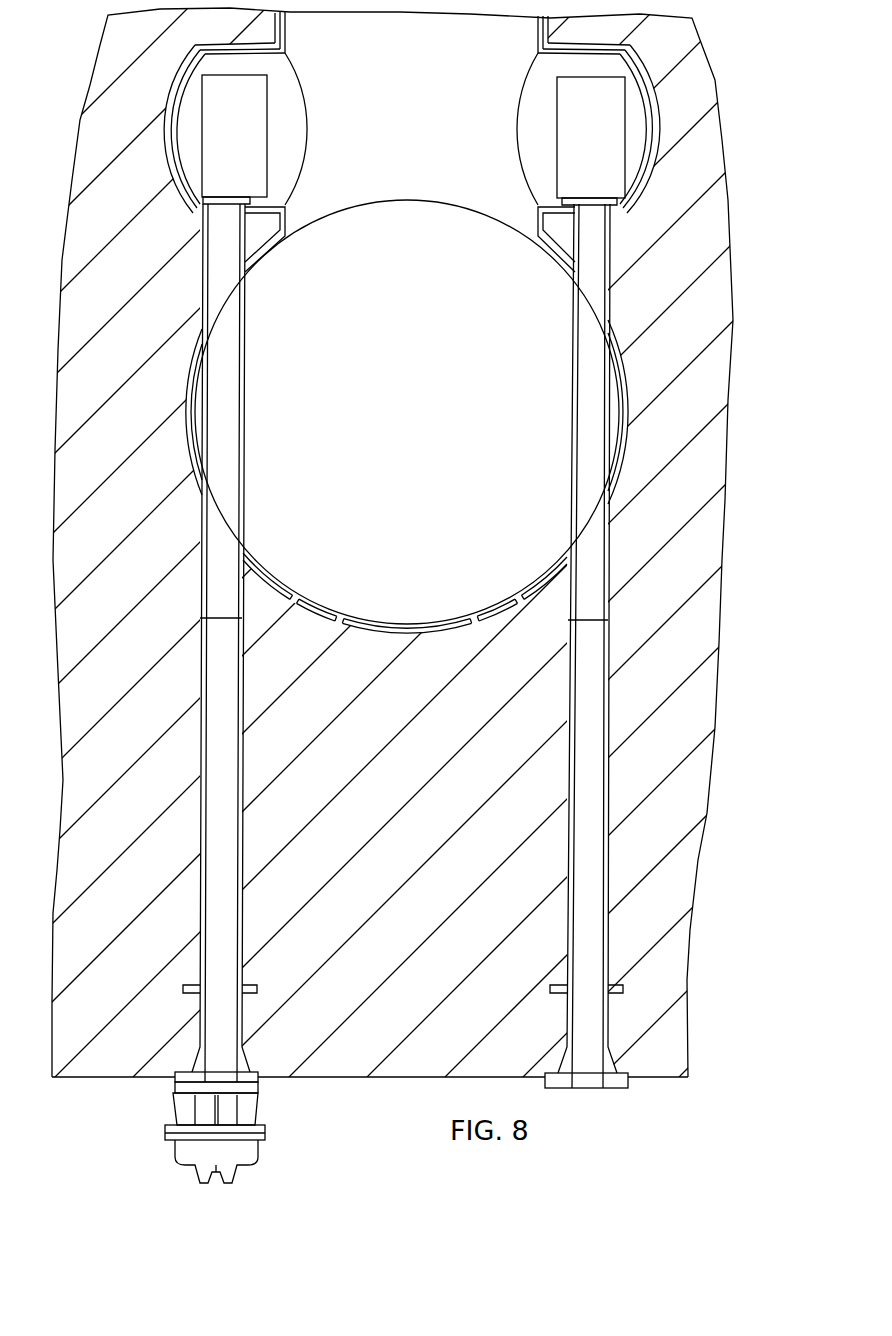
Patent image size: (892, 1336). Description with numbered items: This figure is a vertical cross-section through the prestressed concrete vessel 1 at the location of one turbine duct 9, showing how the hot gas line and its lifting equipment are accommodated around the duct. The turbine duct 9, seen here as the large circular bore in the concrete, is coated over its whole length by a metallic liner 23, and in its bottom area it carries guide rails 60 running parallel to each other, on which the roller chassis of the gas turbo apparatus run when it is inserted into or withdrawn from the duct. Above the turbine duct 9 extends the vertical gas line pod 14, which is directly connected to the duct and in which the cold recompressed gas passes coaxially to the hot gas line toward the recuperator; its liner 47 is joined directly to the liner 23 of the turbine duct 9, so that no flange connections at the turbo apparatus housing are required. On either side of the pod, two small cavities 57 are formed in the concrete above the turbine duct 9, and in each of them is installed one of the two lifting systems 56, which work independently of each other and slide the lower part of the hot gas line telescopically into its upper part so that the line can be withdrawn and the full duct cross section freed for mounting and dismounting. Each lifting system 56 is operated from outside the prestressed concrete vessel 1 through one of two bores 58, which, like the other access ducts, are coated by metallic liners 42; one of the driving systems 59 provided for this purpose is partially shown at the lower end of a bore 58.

The prestressed concrete vessel 1 is at (689, 295).
The turbine duct 9 is at (557, 473).
The gas line pod 14 is at (479, 47).
The metallic liner 23 is at (623, 383).
The metallic liner 42 is at (241, 700).
The liner 47 is at (286, 30).
The lifting system 56 is at (253, 165).
The small cavity 57 is at (256, 60).
The bore 58 is at (236, 873).
The driving system 59 is at (254, 1112).
The guide rails 60 is at (492, 604).